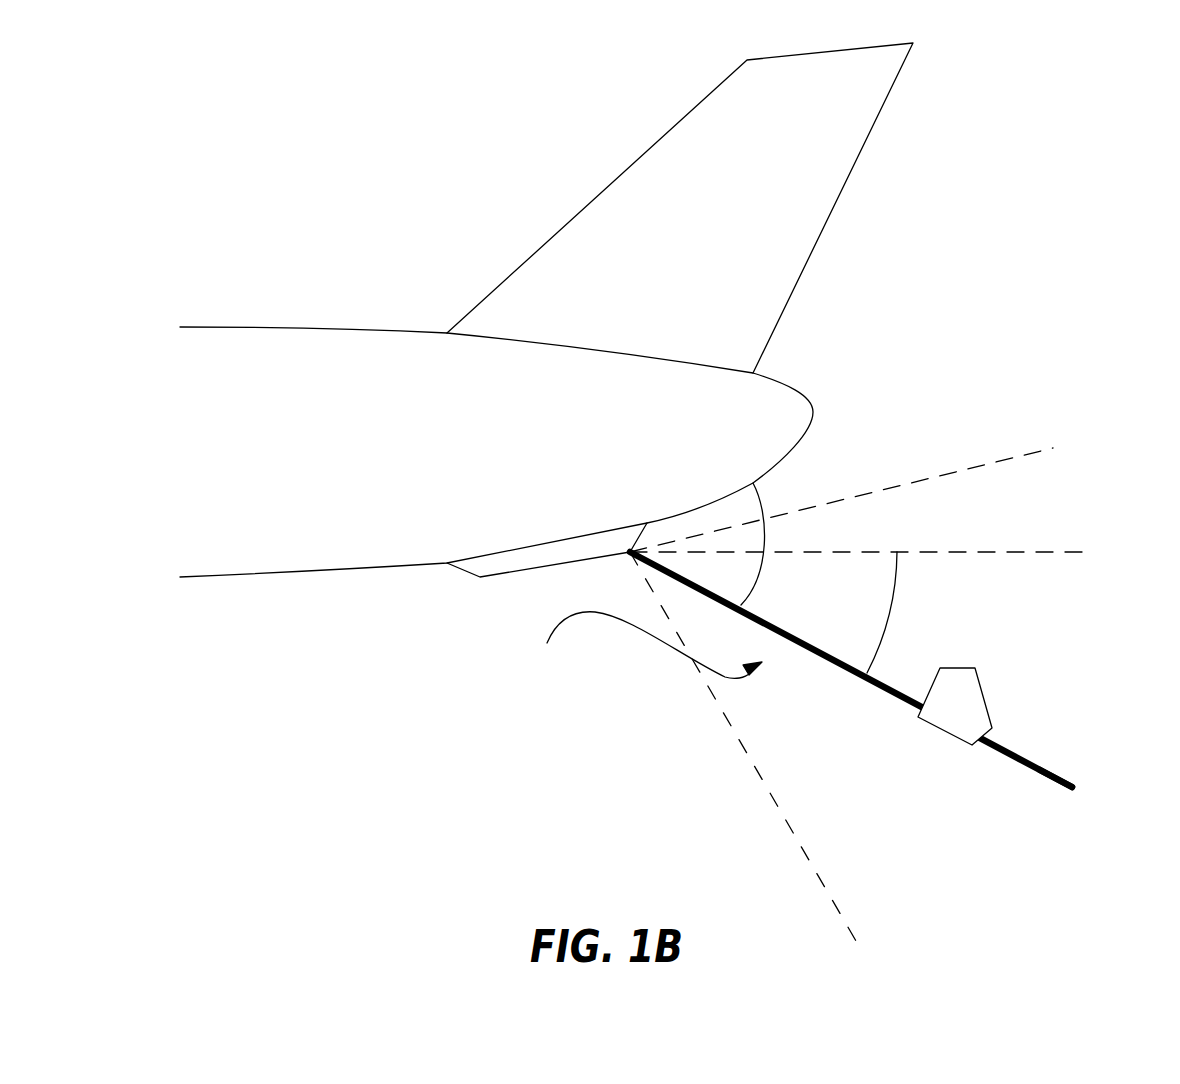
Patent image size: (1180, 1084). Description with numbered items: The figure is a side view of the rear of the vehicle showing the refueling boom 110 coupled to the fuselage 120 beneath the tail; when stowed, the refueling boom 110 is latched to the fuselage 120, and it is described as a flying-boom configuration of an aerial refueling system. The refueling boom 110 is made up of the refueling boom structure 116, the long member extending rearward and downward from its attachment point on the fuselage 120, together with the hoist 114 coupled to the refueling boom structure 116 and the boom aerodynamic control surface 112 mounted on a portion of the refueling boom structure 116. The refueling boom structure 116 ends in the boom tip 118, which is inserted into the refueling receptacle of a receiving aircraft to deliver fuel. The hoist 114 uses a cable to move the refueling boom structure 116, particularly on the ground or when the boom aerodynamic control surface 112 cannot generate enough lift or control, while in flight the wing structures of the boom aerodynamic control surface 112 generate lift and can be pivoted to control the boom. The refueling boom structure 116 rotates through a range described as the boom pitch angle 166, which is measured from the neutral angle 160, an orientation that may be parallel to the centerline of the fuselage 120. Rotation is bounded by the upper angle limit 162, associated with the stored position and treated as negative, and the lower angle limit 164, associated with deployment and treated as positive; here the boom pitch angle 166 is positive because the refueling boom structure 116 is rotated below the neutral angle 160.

The refueling boom 110 is at (645, 645).
The boom aerodynamic control surface 112 is at (977, 673).
The hoist 114 is at (767, 530).
The refueling boom structure 116 is at (850, 673).
The boom tip 118 is at (1070, 777).
The fuselage 120 is at (793, 385).
The neutral angle 160 is at (1030, 553).
The upper angle limit 162 is at (975, 465).
The lower angle limit 164 is at (765, 783).
The boom pitch angle 166 is at (883, 643).